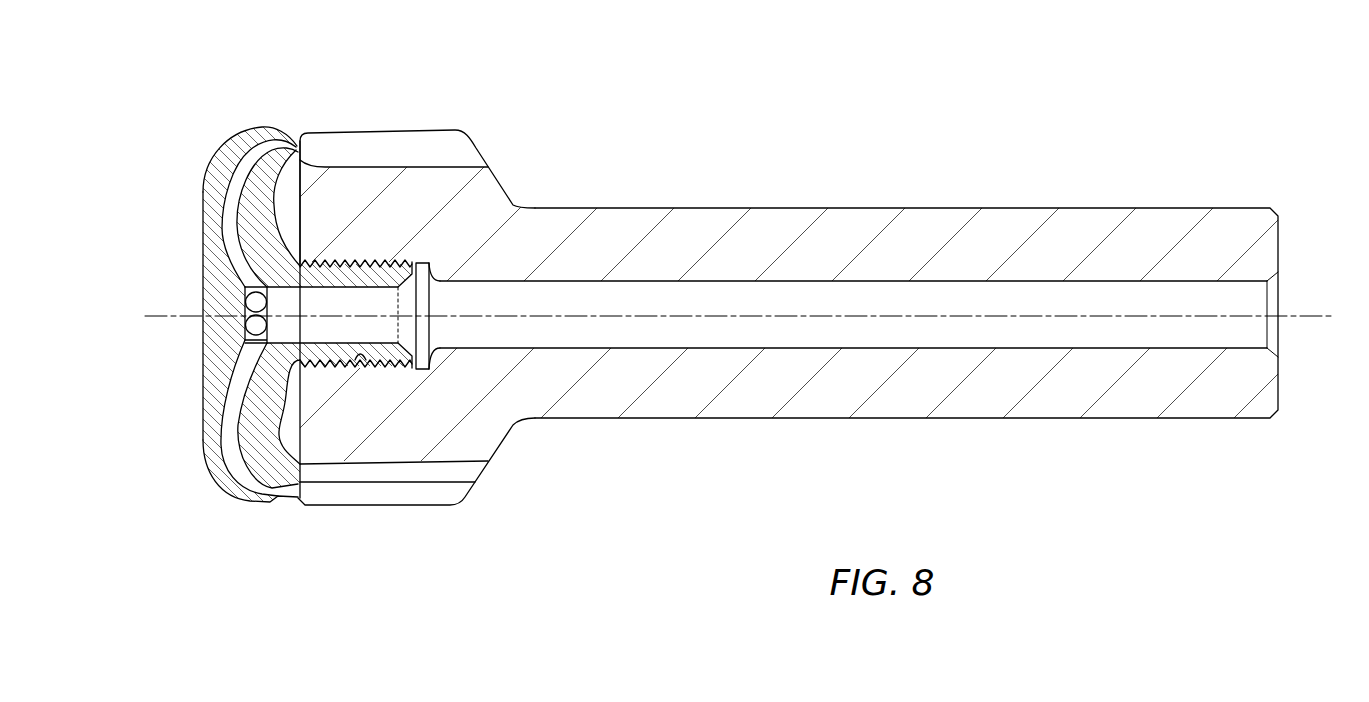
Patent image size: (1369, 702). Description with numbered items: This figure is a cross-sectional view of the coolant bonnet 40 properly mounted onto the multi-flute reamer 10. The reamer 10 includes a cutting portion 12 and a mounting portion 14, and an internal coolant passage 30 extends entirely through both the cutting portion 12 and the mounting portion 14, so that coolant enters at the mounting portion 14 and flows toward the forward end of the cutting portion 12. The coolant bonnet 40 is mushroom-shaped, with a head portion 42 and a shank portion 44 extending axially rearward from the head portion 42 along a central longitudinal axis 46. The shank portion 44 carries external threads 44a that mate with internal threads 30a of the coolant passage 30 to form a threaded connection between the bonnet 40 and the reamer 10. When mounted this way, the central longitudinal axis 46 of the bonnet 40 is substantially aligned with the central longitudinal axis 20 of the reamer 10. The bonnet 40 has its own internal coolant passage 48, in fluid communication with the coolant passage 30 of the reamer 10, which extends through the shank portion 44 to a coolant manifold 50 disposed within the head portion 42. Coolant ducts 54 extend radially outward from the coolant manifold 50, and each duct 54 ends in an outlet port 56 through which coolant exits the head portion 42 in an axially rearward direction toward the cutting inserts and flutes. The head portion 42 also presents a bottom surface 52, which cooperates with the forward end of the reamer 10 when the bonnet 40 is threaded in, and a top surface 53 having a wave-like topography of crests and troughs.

The multi-flute reamer 10 is at (1061, 100).
The cutting portion 12 is at (419, 116).
The mounting portion 14 is at (875, 203).
The central longitudinal axis 20 is at (1300, 320).
The internal coolant passage 30 is at (722, 284).
The internal threads 30a is at (384, 273).
The coolant bonnet 40 is at (248, 102).
The head portion 42 is at (228, 135).
The shank portion 44 is at (406, 373).
The external threads 44a is at (362, 354).
The central longitudinal axis 46 is at (159, 320).
The internal coolant passage 48 is at (286, 342).
The coolant manifold 50 is at (248, 300).
The bottom surface 52 is at (300, 200).
The top surface 53 is at (200, 200).
The internal coolant ducts 54 is at (240, 248).
The outlet port 56 is at (288, 130).